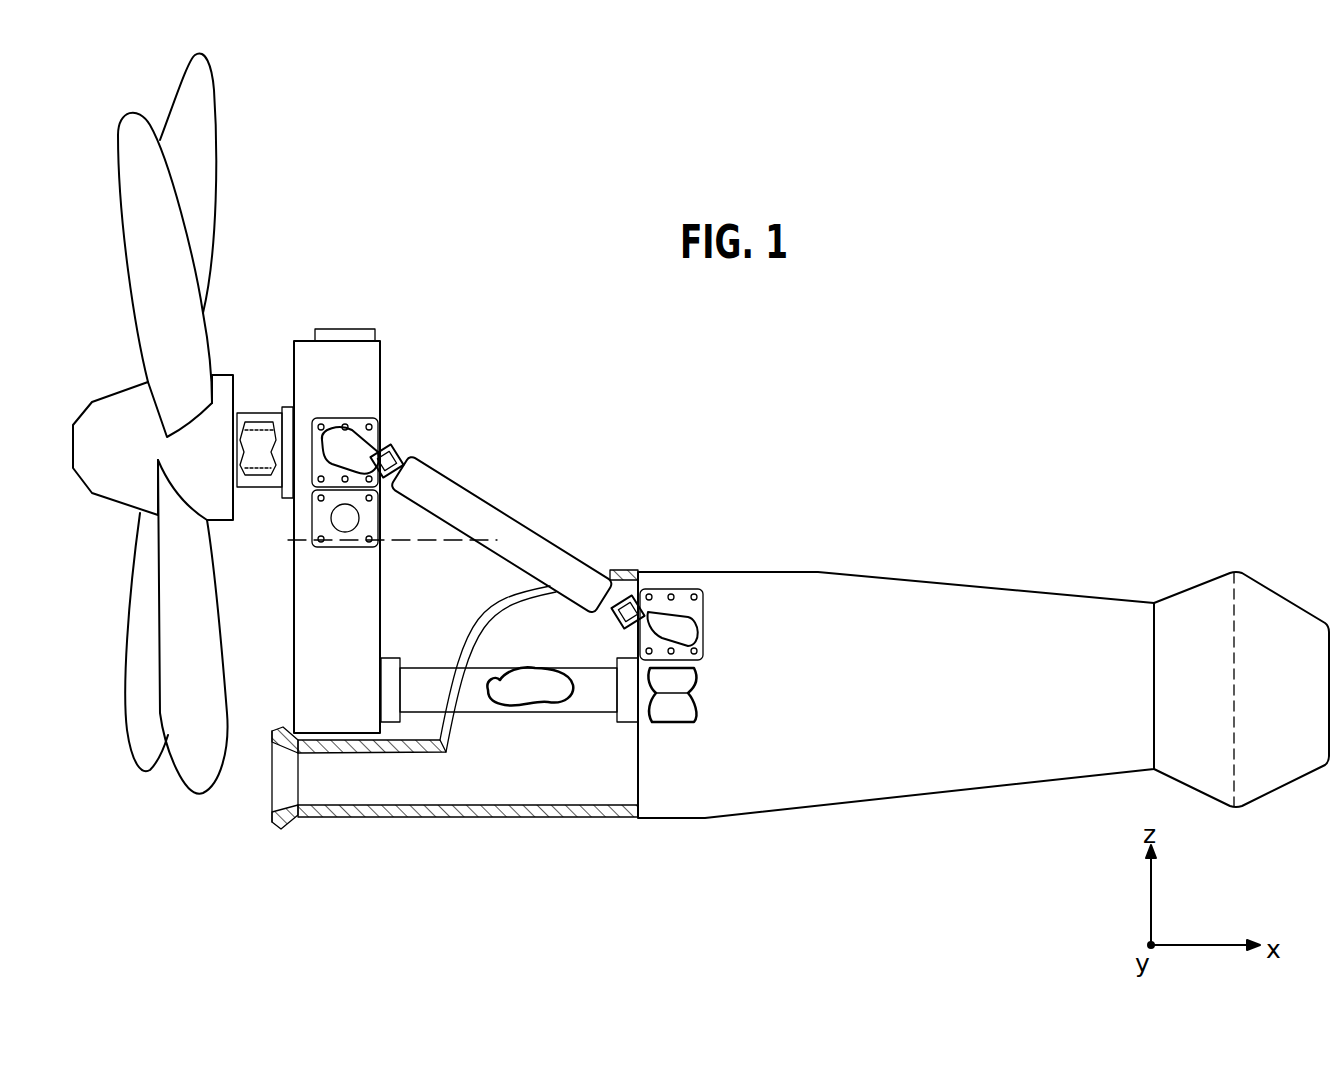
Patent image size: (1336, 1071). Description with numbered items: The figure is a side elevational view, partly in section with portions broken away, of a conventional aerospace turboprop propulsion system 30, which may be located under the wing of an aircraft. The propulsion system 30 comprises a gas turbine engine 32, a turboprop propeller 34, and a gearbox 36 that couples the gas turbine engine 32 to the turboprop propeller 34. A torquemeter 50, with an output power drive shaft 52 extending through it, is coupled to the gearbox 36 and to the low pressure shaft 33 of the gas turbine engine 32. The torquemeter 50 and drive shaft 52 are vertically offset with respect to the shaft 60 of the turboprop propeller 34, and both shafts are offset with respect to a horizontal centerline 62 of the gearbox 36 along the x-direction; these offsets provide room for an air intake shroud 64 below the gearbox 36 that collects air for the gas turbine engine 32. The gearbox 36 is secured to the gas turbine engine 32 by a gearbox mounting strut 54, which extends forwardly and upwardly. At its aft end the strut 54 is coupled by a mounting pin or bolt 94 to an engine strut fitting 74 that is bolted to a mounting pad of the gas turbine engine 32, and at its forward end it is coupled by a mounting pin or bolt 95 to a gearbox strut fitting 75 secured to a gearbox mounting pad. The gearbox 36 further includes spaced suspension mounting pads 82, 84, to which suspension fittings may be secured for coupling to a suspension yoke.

The turboprop propulsion system 30 is at (1071, 473).
The gas turbine engine 32 is at (832, 598).
The low pressure shaft 33 is at (675, 688).
The turboprop propeller 34 is at (208, 198).
The gearbox 36 is at (298, 347).
The torquemeter 50 is at (578, 715).
The output power drive shaft 52 is at (522, 692).
The gearbox mounting strut 54 is at (560, 540).
The shaft 60 is at (260, 440).
The horizontal centerline 62 is at (405, 543).
The air intake shroud 64 is at (268, 785).
The engine strut fitting 74 is at (677, 603).
The gearbox strut fitting 75 is at (360, 422).
The suspension mounting pad 82 is at (320, 515).
The suspension mounting pad 84 is at (347, 335).
The mounting pin or bolt 94 is at (637, 570).
The mounting pin or bolt 95 is at (397, 445).